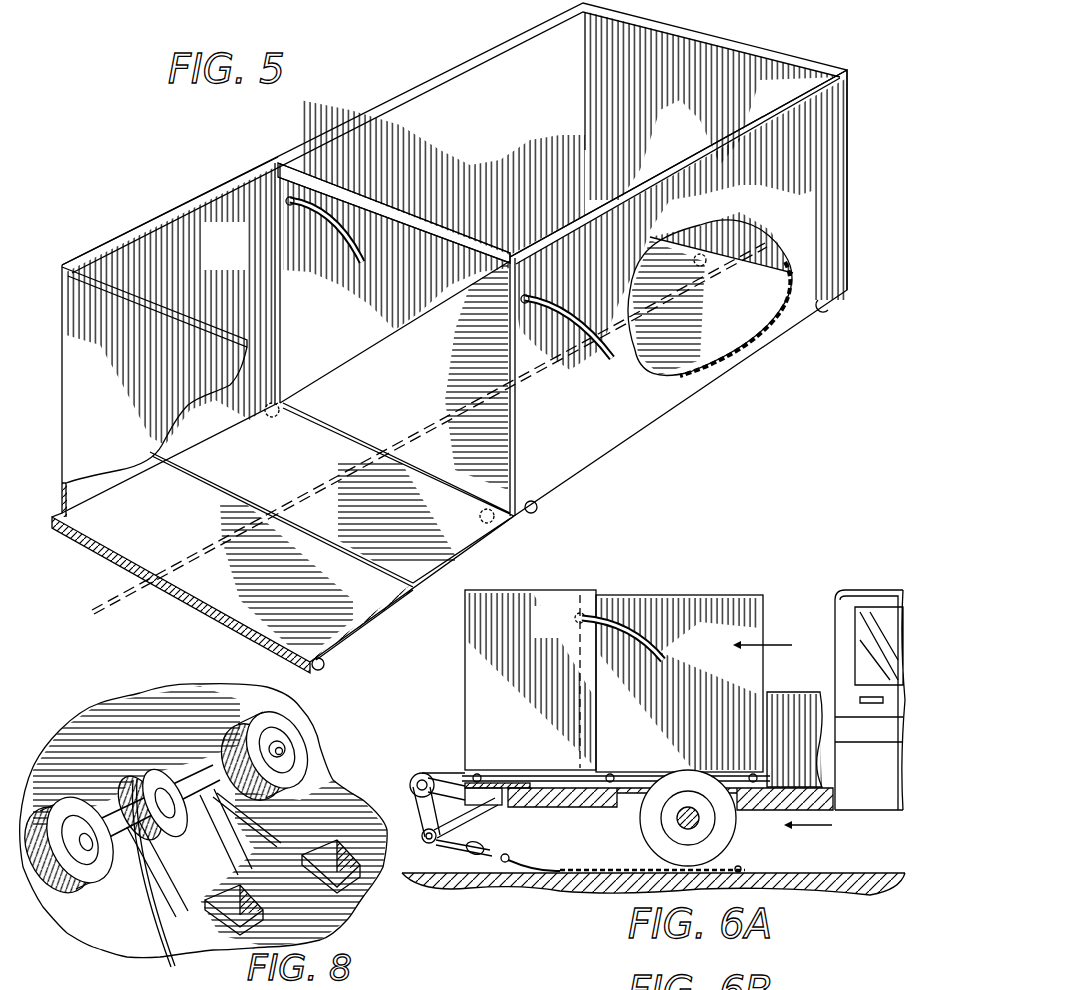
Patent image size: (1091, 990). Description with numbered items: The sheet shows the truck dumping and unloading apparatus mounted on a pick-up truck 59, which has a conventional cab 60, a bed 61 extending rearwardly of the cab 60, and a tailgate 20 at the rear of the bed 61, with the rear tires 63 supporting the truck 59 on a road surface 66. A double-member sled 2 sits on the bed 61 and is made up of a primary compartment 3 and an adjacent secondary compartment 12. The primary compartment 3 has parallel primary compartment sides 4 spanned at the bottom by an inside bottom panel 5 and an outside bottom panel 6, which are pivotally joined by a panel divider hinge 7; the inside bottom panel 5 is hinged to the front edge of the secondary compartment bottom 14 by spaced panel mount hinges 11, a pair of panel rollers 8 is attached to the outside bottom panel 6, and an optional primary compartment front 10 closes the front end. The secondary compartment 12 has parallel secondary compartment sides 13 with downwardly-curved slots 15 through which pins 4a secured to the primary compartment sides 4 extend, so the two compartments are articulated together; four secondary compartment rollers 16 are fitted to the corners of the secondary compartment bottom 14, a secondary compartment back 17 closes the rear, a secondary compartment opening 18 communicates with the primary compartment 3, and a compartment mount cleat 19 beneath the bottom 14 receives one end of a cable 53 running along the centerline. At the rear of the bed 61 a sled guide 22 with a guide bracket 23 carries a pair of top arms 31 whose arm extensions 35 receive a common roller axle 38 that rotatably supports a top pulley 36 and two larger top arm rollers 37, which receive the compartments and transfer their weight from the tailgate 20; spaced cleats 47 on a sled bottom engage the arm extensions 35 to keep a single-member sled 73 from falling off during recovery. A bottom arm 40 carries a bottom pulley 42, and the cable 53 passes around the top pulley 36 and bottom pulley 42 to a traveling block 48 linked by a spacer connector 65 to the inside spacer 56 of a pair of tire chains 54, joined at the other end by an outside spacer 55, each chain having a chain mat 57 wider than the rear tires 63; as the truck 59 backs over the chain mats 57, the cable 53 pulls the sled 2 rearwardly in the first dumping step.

In FIG. 5, the double-member sled 2 is at (400, 84).
In FIG. 8, the double-member sled 2 is at (85, 989).
In FIG. 5, the primary compartment 3 is at (212, 180).
In FIG. 6A, the primary compartment 3 is at (500, 584).
In FIG. 5, the primary compartment sides 4 is at (228, 251).
In FIG. 6A, the primary compartment sides 4 is at (550, 634).
In FIG. 5, the pins 4a is at (287, 202).
In FIG. 6A, the pins 4a is at (580, 610).
In FIG. 5, the inside bottom panel 5 is at (250, 469).
In FIG. 6A, the inside bottom panel 5 is at (535, 770).
In FIG. 5, the outside bottom panel 6 is at (160, 534).
In FIG. 6A, the outside bottom panel 6 is at (490, 770).
In FIG. 8, the outside bottom panel 6 is at (192, 712).
In FIG. 5, the panel divider hinge 7 is at (414, 594).
In FIG. 5, the panel rollers 8 is at (326, 660).
In FIG. 6A, the panel rollers 8 is at (478, 774).
In FIG. 5, the primary compartment front 10 is at (107, 446).
In FIG. 5, the panel mount hinges 11 is at (280, 420).
In FIG. 5, the secondary compartment 12 is at (428, 78).
In FIG. 6A, the secondary compartment 12 is at (652, 583).
In FIG. 5, the secondary compartment sides 13 is at (528, 121).
In FIG. 6A, the secondary compartment sides 13 is at (635, 709).
In FIG. 5, the secondary compartment bottom 14 is at (412, 403).
In FIG. 5, the slots 15 is at (356, 256).
In FIG. 6A, the slots 15 is at (662, 652).
In FIG. 5, the secondary compartment rollers 16 is at (538, 507).
In FIG. 6A, the secondary compartment rollers 16 is at (607, 784).
In FIG. 5, the secondary compartment back 17 is at (731, 92).
In FIG. 5, the secondary compartment opening 18 is at (430, 244).
In FIG. 5, the compartment mount cleat 19 is at (704, 266).
In FIG. 6A, the tailgate 20 is at (545, 796).
In FIG. 6A, the sled guide 22 is at (425, 768).
In FIG. 6A, the guide bracket 23 is at (498, 798).
In FIG. 6A, the top arms 31 is at (445, 790).
In FIG. 8, the top arms 31 is at (220, 858).
In FIG. 8, the arm extensions 35 is at (200, 775).
In FIG. 8, the top pulley 36 is at (165, 778).
In FIG. 6A, the top arm rollers 37 is at (415, 772).
In FIG. 8, the top arm rollers 37 is at (60, 802).
In FIG. 8, the roller axle 38 is at (285, 748).
In FIG. 6A, the bottom arm 40 is at (470, 818).
In FIG. 6A, the bottom pulley 42 is at (421, 838).
In FIG. 8, the cleats 47 is at (270, 906).
In FIG. 6A, the traveling block 48 is at (467, 851).
In FIG. 5, the cable 53 is at (437, 400).
In FIG. 6A, the cable 53 is at (437, 773).
In FIG. 8, the cable 53 is at (165, 950).
In FIG. 6A, the tire chains 54 is at (578, 858).
In FIG. 6A, the outside spacer 55 is at (746, 870).
In FIG. 6A, the inside spacer 56 is at (504, 865).
In FIG. 6A, the chain mat 57 is at (562, 873).
In FIG. 6A, the pick-up truck 59 is at (848, 585).
In FIG. 6A, the cab 60 is at (903, 590).
In FIG. 6A, the bed 61 is at (546, 781).
In FIG. 6A, the rear tires 63 is at (736, 825).
In FIG. 6A, the spacer connector 65 is at (494, 860).
In FIG. 6A, the road surface 66 is at (846, 862).
In FIG. 8, the single-member sled 73 is at (306, 912).